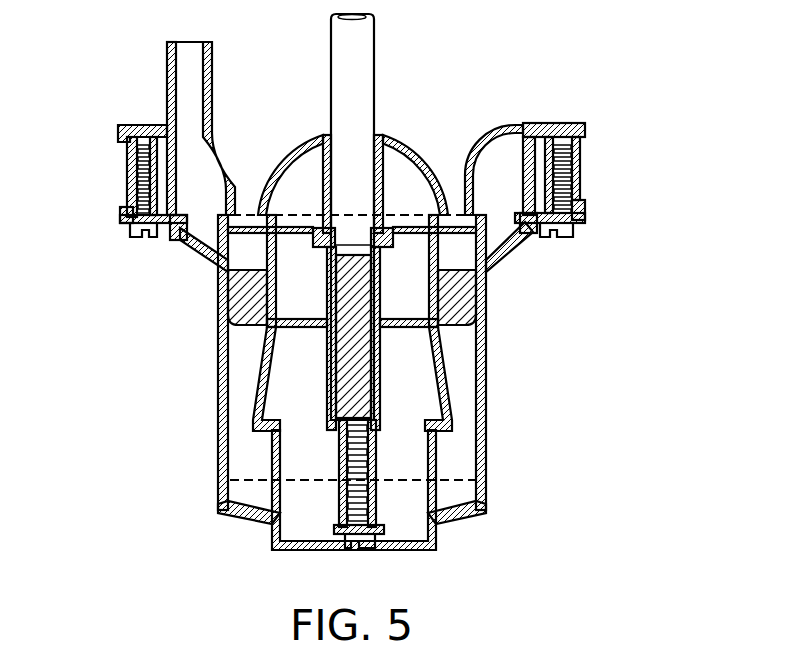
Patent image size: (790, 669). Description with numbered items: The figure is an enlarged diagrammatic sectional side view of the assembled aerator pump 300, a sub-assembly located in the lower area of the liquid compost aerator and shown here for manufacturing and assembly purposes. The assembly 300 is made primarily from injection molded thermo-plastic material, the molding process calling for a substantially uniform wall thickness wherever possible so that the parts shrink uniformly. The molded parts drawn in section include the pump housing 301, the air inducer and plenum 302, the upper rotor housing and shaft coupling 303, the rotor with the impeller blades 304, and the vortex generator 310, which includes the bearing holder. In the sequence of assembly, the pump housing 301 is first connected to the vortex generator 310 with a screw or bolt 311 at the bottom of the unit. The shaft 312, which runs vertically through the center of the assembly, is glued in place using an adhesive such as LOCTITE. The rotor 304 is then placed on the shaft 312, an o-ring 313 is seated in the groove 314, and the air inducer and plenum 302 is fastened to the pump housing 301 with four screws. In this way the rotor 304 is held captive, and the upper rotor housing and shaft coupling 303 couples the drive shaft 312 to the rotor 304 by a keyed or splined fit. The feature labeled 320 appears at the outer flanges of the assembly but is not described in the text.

The aerator pump 300 is at (486, 55).
The pump housing 301 is at (486, 423).
The air inducer and plenum 302 is at (503, 126).
The upper rotor housing and shaft coupling 303 is at (413, 151).
The rotor with impeller blades 304 is at (480, 302).
The vortex generator 310 is at (436, 383).
The screw or bolt 311 is at (342, 546).
The shaft 312 is at (360, 364).
The o-ring 313 is at (526, 228).
The groove 314 is at (167, 241).
The nut 320 is at (137, 239).